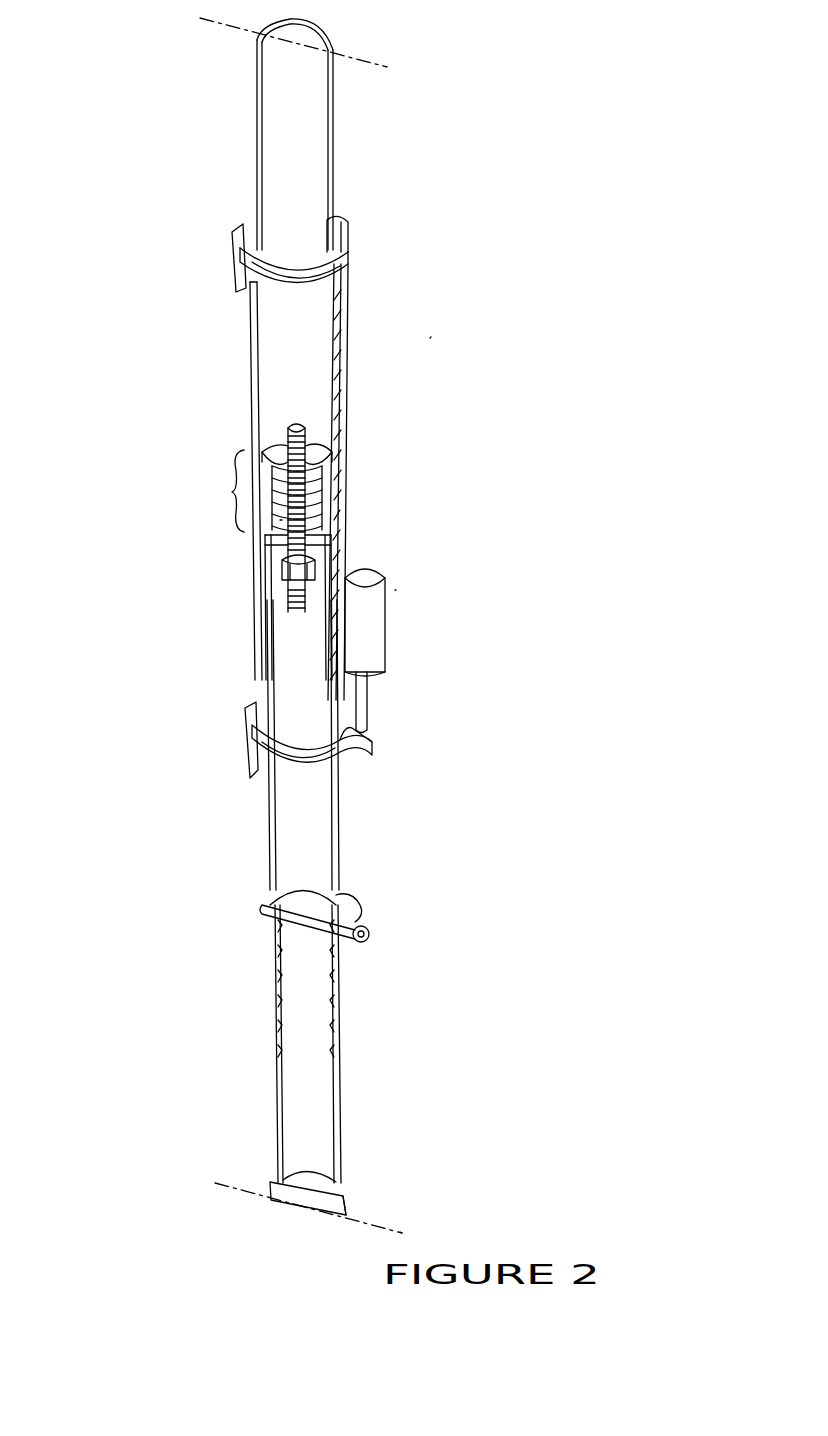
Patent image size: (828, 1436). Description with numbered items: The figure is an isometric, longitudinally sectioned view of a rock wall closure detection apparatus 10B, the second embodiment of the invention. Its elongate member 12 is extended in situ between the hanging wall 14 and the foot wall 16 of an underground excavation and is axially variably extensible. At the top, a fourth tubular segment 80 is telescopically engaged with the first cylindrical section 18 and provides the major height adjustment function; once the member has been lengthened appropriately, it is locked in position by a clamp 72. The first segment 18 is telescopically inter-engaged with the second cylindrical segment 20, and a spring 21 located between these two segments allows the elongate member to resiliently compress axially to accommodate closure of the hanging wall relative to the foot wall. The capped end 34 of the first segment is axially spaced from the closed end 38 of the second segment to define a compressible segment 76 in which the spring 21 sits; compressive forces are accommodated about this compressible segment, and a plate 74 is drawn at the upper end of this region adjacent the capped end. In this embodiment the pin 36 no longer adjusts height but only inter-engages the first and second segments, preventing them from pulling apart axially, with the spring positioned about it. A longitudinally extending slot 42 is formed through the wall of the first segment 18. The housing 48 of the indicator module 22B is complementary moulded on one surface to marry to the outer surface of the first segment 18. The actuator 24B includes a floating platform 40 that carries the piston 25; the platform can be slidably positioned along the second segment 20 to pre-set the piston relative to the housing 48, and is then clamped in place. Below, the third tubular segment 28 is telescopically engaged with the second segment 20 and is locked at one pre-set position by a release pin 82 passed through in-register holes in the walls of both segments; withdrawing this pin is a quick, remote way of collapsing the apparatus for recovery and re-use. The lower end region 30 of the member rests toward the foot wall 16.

The rock wall closure detection apparatus 10B is at (430, 338).
The elongate member 12 is at (350, 300).
The hanging wall 14 is at (232, 28).
The foot wall 16 is at (370, 1220).
The first cylindrical section 18 is at (247, 362).
The second cylindrical segment 20 is at (265, 800).
The spring 21 is at (290, 512).
The indicator module 22B is at (395, 590).
The actuator 24B is at (378, 742).
The piston 25 is at (370, 698).
The third tubular segment 28 is at (345, 1025).
The tube end 30 is at (350, 1178).
The capped end 34 is at (318, 450).
The pin 36 is at (290, 592).
The closed end 38 is at (345, 525).
The floating platform 40 is at (250, 762).
The longitudinally extending slot 42 is at (278, 1192).
The housing 48 is at (378, 640).
The clamp 72 is at (228, 257).
The plate 74 is at (310, 462).
The compressible segment 76 is at (230, 505).
The fourth tubular segment 80 is at (334, 142).
The release pin 82 is at (372, 930).